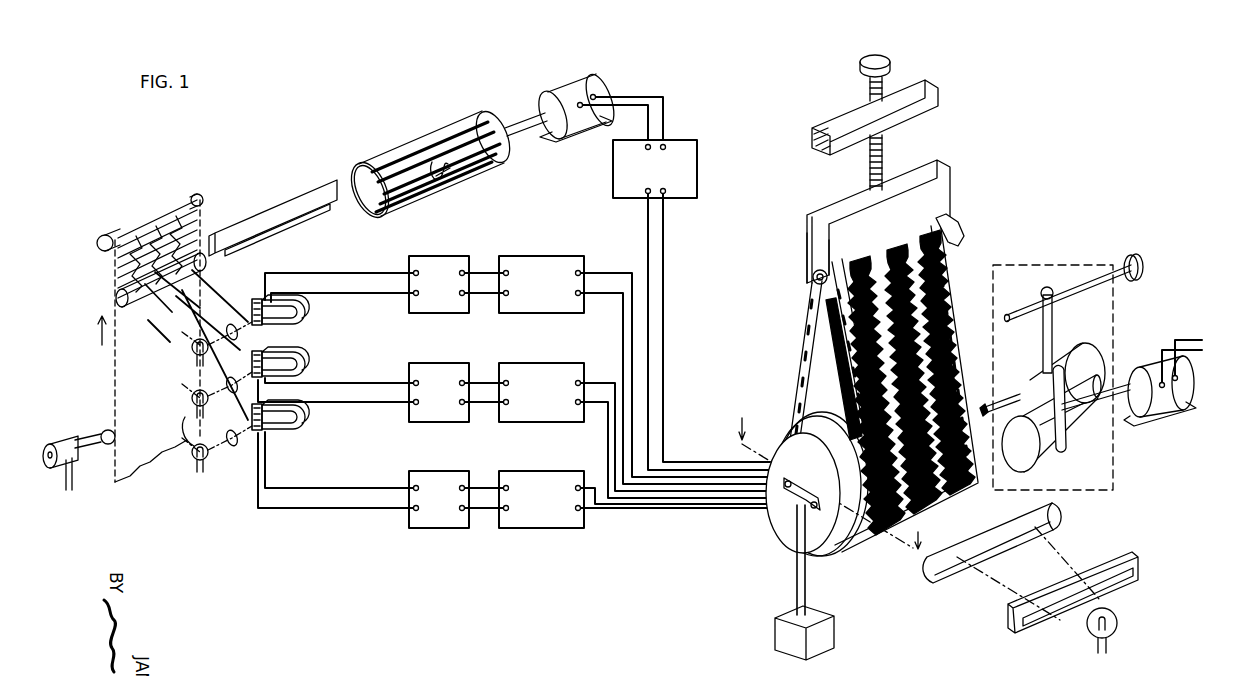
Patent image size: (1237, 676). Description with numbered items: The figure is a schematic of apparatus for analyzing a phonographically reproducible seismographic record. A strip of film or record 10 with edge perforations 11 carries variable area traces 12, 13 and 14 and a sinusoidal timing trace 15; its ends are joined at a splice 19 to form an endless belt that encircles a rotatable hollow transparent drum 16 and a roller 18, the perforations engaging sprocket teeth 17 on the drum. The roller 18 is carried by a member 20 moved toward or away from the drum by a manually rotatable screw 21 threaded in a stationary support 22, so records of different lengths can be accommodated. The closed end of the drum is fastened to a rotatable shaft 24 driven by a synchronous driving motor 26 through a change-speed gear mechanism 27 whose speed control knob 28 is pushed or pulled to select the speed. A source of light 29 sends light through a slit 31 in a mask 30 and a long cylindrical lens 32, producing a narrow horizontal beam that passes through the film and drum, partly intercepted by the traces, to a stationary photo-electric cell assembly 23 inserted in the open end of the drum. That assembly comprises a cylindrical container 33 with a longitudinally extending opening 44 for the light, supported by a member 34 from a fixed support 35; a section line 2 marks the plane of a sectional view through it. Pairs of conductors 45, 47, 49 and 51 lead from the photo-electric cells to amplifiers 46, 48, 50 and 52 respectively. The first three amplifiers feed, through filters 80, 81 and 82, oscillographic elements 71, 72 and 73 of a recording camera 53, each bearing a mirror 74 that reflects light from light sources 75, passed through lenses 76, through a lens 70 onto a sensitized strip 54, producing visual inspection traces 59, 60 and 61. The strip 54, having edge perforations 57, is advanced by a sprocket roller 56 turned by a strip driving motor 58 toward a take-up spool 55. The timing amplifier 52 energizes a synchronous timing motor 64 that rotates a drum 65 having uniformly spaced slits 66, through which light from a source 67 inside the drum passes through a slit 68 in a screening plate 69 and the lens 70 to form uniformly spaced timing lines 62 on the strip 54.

The section line 2- 2 is at (828, 473).
The film or record 10 is at (950, 242).
The edge perforations 11 is at (952, 268).
The variable area trace 12 is at (930, 210).
The variable area trace 13 is at (904, 240).
The variable area trace 14 is at (878, 252).
The timing trace 15 is at (842, 262).
The rotatable drum 16 is at (794, 438).
The teeth 17 is at (992, 404).
The roller 18 is at (808, 270).
The splice 19 is at (796, 372).
The member 20 is at (810, 236).
The screw 21 is at (890, 84).
The stationary support 22 is at (826, 124).
The photo-electric cell assembly 23 is at (826, 465).
The rotatable shaft 24 is at (1010, 402).
The synchronous driving motor 26 is at (1150, 370).
The change-speed gear mechanism 27 is at (1114, 298).
The speed control knob 28 is at (1142, 262).
The source of light 29 is at (1118, 622).
The mask 30 is at (1134, 555).
The slit 31 is at (1134, 572).
The cylindrical lens 32 is at (1058, 515).
The cylindrical container 33 is at (776, 528).
The member 34 is at (797, 562).
The fixed support 35 is at (836, 638).
The longitudinally extending opening 44 is at (832, 552).
The conductors 45 is at (726, 510).
The amplifier 46 is at (520, 531).
The conductors 47 is at (694, 500).
The amplifier 48 is at (520, 425).
The conductors 49 is at (658, 488).
The amplifier 50 is at (520, 316).
The conductors 51 is at (691, 462).
The amplifier 52 is at (698, 185).
The recording camera 53 is at (324, 335).
The sensitized strip 54 is at (195, 345).
The take-up spool 55 is at (105, 236).
The roller 56 is at (106, 446).
The edge perforations 57 is at (115, 408).
The strip driving motor 58 is at (50, 468).
The visual inspection trace 59 is at (138, 230).
The visual inspection trace 60 is at (158, 222).
The visual inspection trace 61 is at (178, 212).
The timing lines 62 is at (200, 205).
The synchronous timing motor 64 is at (570, 90).
The drum 65 is at (372, 162).
The slits 66 is at (416, 150).
The light source 67 is at (452, 140).
The slit 68 is at (318, 222).
The mask or screening plate 69 is at (308, 192).
The lens 70 is at (118, 296).
The oscillographic element 71 is at (296, 420).
The oscillographic element 72 is at (306, 358).
The oscillographic element 73 is at (306, 306).
The mirror 74 is at (254, 304).
The light sources 75 is at (196, 354).
The lenses 76 is at (233, 326).
The filter 80 is at (430, 531).
The filter 81 is at (430, 425).
The filter 82 is at (430, 316).